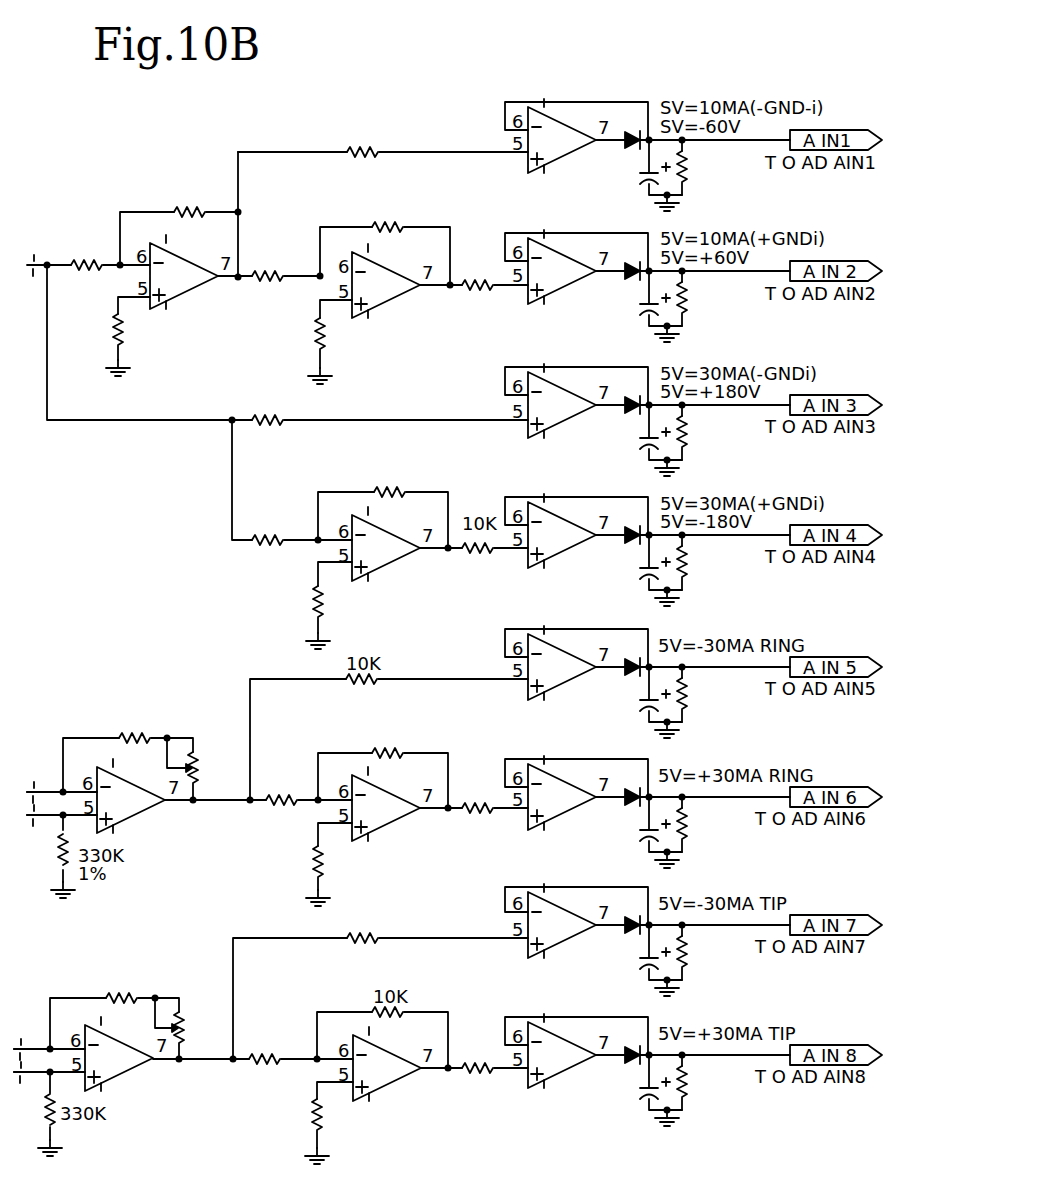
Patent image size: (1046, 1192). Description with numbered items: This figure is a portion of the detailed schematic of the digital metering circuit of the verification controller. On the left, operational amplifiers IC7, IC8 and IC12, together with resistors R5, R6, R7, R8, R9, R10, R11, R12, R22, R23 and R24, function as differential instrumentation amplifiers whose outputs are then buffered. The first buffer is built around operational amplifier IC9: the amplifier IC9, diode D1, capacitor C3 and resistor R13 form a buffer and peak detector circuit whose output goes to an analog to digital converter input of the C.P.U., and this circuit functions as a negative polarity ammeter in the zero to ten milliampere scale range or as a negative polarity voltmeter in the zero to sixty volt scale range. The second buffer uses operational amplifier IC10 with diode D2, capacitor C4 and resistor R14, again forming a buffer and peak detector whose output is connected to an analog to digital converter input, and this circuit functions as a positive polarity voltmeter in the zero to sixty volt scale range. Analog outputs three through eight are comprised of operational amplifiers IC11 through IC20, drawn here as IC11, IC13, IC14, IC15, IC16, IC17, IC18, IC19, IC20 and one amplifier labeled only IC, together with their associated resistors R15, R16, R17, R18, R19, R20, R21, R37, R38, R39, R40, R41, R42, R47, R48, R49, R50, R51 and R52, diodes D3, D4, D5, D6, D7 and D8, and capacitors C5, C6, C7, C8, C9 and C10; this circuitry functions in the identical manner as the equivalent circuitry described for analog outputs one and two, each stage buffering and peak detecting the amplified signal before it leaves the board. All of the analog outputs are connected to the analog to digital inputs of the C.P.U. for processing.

The resistor R5 is at (89, 267).
The resistor R6 is at (193, 211).
The resistor R7 is at (124, 328).
The resistor R8 is at (365, 151).
The resistor R9 is at (270, 275).
The resistor R10 is at (390, 226).
The resistor R11 is at (324, 334).
The resistor R12 is at (480, 279).
The resistor R13 is at (707, 167).
The resistor R14 is at (707, 298).
The 100K load resistor R15 is at (707, 432).
The 100K load resistor R16 is at (707, 562).
The 100K load resistor R17 is at (707, 694).
The 100K load resistor R18 is at (707, 824).
The 100K load resistor R19 is at (707, 952).
The 100K load resistor R20 is at (707, 1082).
The 10K resistor R21 is at (270, 419).
The resistor R22 is at (270, 539).
The resistor R23 is at (392, 491).
The resistor R24 is at (319, 597).
The 270K feedback resistor R37 is at (128, 998).
The 100K potentiometer R38 is at (202, 1023).
The 10K resistor R39 is at (365, 937).
The 10K resistor R40 is at (267, 1058).
The 10K resistor to ground R41 is at (319, 1115).
The 10K resistor R42 is at (480, 1063).
The 270K feedback resistor R47 is at (140, 738).
The 100K potentiometer R48 is at (217, 763).
The 10K resistor R49 is at (284, 799).
The 10K feedback resistor R50 is at (390, 752).
The 10K resistor to ground R51 is at (319, 856).
The 10K resistor R52 is at (480, 803).
The operational amplifier IC7 is at (184, 272).
The operational amplifier IC8 is at (386, 281).
The operational amplifier IC9 is at (562, 136).
The operational amplifier IC10 is at (562, 267).
The operational amplifier IC11 is at (562, 401).
The operational amplifier IC12 is at (386, 544).
The operational amplifier IC13 is at (562, 531).
The operational amplifier IC14 is at (562, 663).
The operational amplifier IC15 is at (131, 796).
The operational amplifier IC16 is at (386, 804).
The operational amplifier IC17 is at (562, 793).
The operational amplifier IC18 is at (119, 1054).
The operational amplifier IC19 is at (387, 1064).
The operational amplifier IC20 is at (562, 1051).
The operational amplifier IC is at (562, 921).
The diode D1 is at (632, 126).
The diode D2 is at (632, 257).
The diode D3 is at (632, 391).
The diode D4 is at (632, 521).
The diode D5 is at (632, 653).
The diode D6 is at (632, 783).
The diode D7 is at (632, 911).
The diode D8 is at (632, 1041).
The capacitor C3 is at (646, 175).
The capacitor C4 is at (646, 306).
The 2.2 uF capacitor C5 is at (646, 440).
The 2.2 uF capacitor C6 is at (646, 570).
The 2.2 uF capacitor C7 is at (646, 702).
The 2.2 uF capacitor C8 is at (646, 832).
The 2.2 uF capacitor C9 is at (646, 960).
The 2.2 uF capacitor C10 is at (642, 1090).